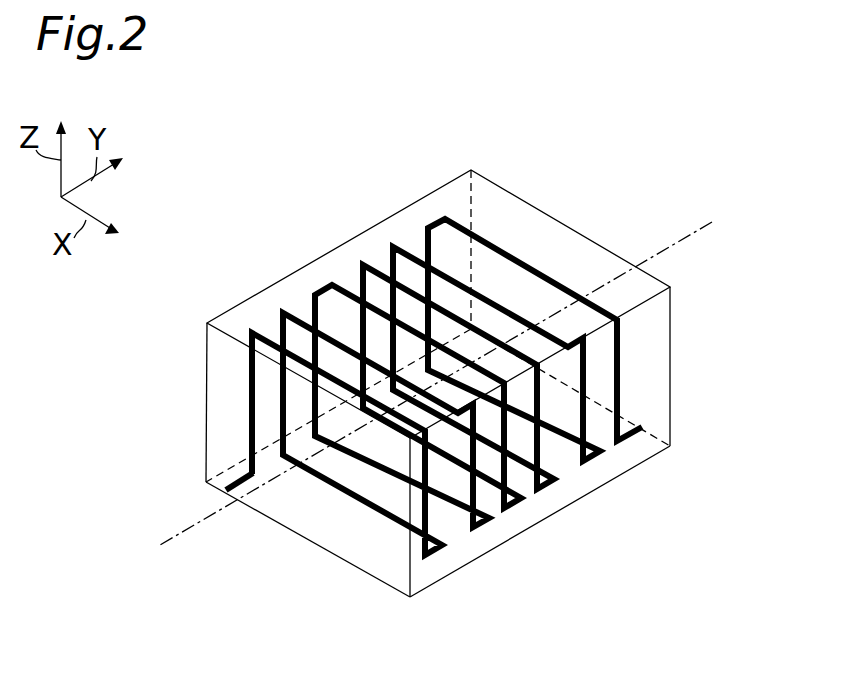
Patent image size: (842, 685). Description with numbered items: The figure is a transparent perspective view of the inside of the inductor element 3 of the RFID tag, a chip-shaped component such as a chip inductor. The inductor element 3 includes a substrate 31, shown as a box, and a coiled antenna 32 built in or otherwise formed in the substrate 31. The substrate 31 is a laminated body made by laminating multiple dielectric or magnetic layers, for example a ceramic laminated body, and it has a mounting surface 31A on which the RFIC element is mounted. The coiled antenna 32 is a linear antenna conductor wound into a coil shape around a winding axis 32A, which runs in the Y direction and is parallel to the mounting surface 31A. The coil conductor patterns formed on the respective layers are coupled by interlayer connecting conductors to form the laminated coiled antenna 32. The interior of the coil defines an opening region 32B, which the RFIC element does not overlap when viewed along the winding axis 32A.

The inductor element 3 is at (764, 322).
The substrate 31 is at (650, 397).
The mounting surface 31A is at (573, 480).
The coiled antenna 32 is at (622, 362).
The winding axis 32A is at (706, 201).
The opening region 32B is at (325, 520).